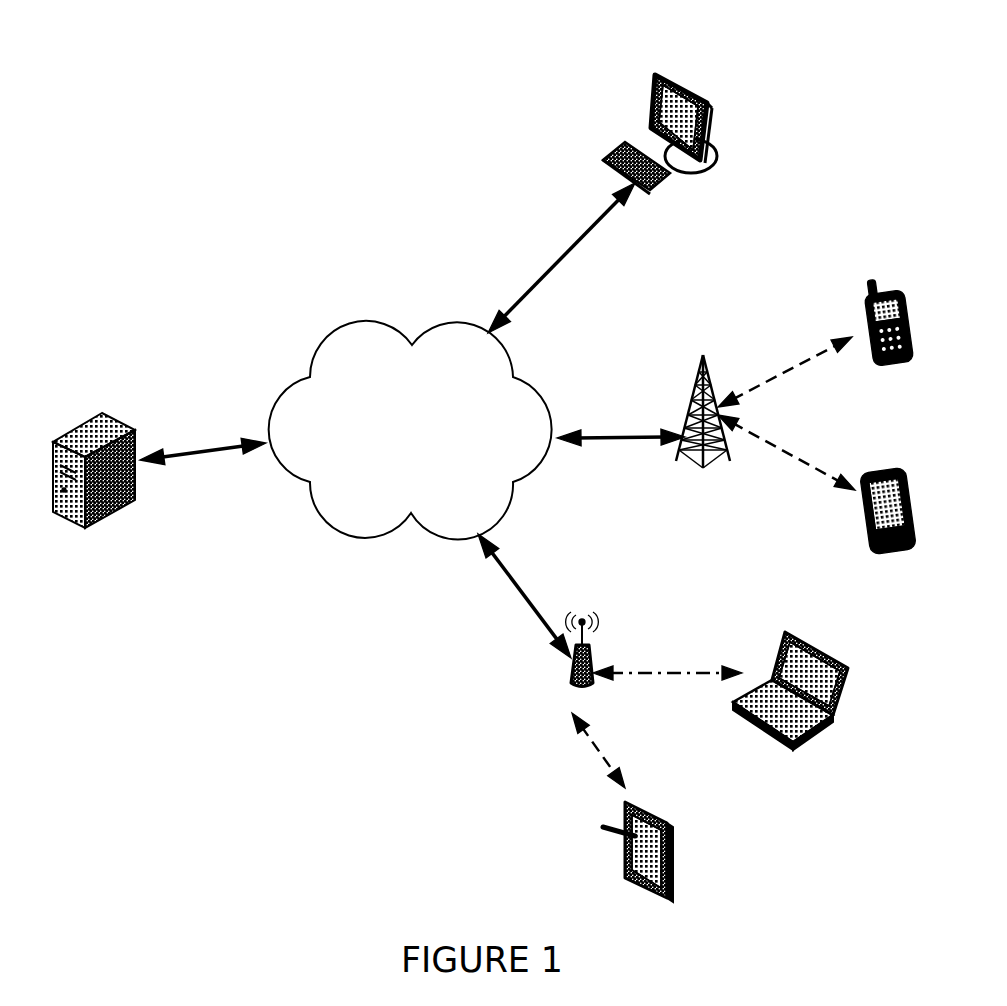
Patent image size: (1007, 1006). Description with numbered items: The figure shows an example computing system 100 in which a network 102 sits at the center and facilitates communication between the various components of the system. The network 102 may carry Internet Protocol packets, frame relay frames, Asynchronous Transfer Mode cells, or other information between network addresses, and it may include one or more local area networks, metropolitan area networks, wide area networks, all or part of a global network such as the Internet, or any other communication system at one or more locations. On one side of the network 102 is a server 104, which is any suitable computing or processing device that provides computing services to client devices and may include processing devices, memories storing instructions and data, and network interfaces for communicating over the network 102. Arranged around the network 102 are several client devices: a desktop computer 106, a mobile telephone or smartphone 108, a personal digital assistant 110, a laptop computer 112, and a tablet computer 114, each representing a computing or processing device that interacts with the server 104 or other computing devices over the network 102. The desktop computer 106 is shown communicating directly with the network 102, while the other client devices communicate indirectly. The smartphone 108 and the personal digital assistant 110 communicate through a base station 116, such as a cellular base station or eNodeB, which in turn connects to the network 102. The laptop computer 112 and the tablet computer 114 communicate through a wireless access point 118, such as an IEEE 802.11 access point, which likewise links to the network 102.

The computing system 100 is at (224, 176).
The network 102 is at (316, 334).
The server 104 is at (70, 430).
The desktop computer 106 is at (655, 78).
The mobile telephone or smartphone 108 is at (907, 308).
The personal digital assistant (PDA) 110 is at (905, 480).
The laptop computer 112 is at (852, 676).
The tablet computer 114 is at (675, 843).
The base station 116 is at (728, 457).
The wireless access point 118 is at (593, 658).